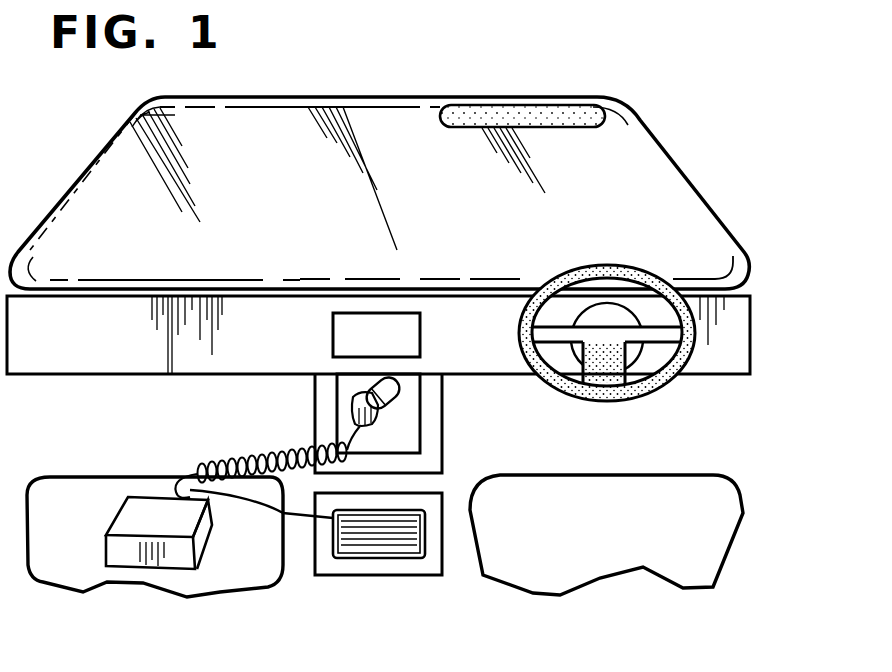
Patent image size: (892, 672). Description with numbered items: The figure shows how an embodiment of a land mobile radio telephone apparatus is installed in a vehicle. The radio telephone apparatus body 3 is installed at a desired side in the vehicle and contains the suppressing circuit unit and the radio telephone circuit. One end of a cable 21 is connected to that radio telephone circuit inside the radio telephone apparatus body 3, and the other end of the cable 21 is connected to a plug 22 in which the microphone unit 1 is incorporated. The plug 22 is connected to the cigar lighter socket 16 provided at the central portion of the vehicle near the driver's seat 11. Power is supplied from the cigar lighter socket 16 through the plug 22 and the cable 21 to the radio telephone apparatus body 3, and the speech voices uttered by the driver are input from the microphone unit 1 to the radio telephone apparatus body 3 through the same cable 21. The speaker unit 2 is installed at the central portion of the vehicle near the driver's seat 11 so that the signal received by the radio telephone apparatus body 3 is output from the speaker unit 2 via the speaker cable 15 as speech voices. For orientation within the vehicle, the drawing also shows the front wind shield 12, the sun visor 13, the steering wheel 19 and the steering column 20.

The microphone unit 1 is at (380, 420).
The speaker unit 2 is at (400, 558).
The radio telephone apparatus body 3 is at (140, 552).
The driver's seat 11 is at (600, 538).
The front wind shield 12 is at (290, 112).
The sun visor 13 is at (577, 112).
The speaker cable 15 is at (260, 505).
The cigar lighter socket 16 is at (393, 386).
The steering wheel 19 is at (613, 320).
The steering column 20 is at (628, 346).
The cable 21 is at (226, 453).
The plug 22 is at (385, 392).